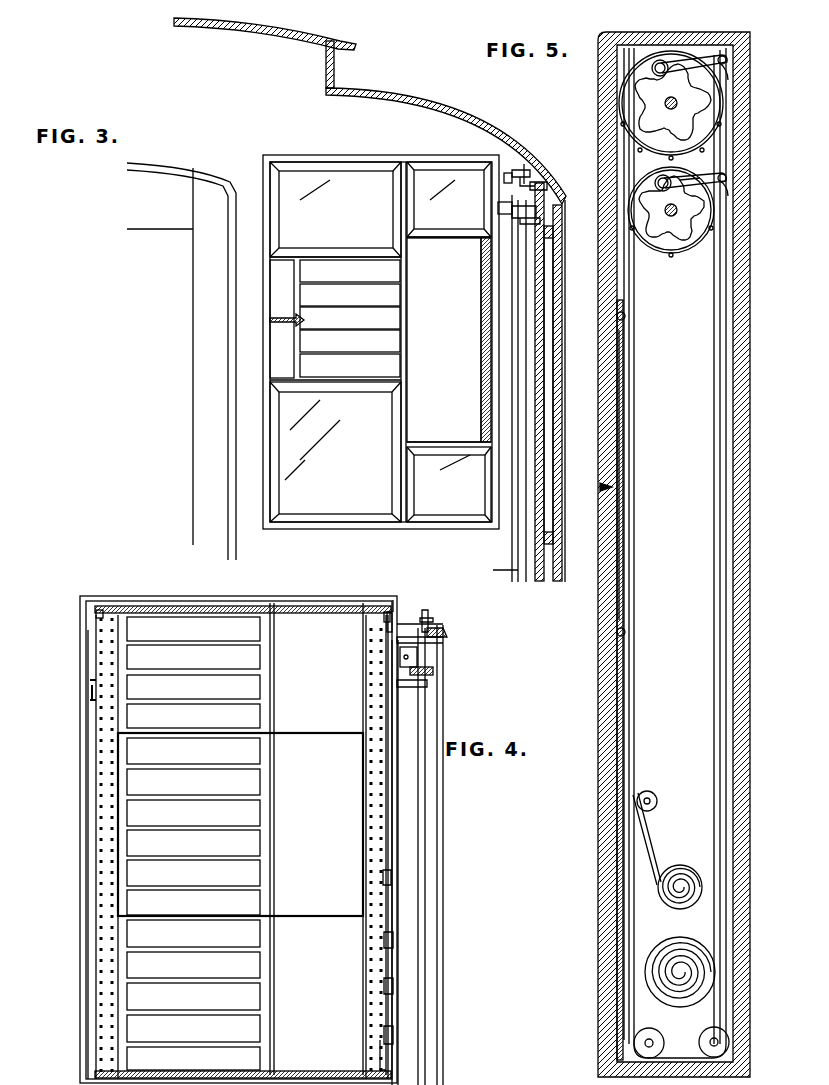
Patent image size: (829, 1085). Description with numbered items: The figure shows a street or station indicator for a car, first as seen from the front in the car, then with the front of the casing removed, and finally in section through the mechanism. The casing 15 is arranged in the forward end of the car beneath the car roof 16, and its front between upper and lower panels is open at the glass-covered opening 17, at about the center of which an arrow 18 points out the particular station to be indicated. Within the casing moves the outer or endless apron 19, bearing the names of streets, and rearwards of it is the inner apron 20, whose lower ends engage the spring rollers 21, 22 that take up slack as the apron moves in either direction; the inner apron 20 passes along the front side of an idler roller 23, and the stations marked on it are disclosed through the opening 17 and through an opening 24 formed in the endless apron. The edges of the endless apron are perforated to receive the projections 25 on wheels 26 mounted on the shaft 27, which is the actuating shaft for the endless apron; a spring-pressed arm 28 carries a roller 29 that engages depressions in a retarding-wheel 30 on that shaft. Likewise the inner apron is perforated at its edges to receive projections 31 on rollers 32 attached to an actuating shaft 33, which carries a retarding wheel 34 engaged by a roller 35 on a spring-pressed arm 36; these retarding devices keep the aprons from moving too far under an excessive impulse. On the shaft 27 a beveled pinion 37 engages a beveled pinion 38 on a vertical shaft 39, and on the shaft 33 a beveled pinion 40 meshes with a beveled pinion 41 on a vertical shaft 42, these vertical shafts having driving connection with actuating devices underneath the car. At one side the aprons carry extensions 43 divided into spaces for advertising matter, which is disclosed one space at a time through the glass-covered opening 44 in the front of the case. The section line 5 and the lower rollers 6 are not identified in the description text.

In FIG. 4, the shaft 5 is at (393, 605).
In FIG. 5, the guide rollers 6 is at (703, 1034).
In FIG. 3, the casing 15 is at (345, 156).
In FIG. 5, the casing 15 is at (750, 333).
In FIG. 4, the casing 15 is at (86, 831).
In FIG. 3, the car roof 16 is at (470, 121).
In FIG. 3, the opening 17 is at (300, 373).
In FIG. 5, the opening 17 is at (604, 418).
In FIG. 4, the opening 17 is at (260, 601).
In FIG. 3, the arrow 18 is at (270, 319).
In FIG. 5, the arrow 18 is at (604, 488).
In FIG. 4, the arrow 18 is at (240, 824).
In FIG. 5, the endless apron 19 is at (633, 709).
In FIG. 5, the apron 20 is at (640, 779).
In FIG. 4, the apron 20 is at (392, 877).
In FIG. 5, the spring roller 21 is at (671, 868).
In FIG. 4, the spring roller 21 is at (394, 987).
In FIG. 5, the spring roller 22 is at (673, 952).
In FIG. 4, the spring roller 22 is at (394, 1036).
In FIG. 5, the idler roller 23 is at (659, 800).
In FIG. 4, the idler roller 23 is at (394, 941).
In FIG. 5, the opening 24 is at (630, 386).
In FIG. 4, the opening 24 is at (393, 680).
In FIG. 5, the projections 25 is at (700, 138).
In FIG. 5, the wheels 26 is at (712, 86).
In FIG. 4, the wheels 26 is at (101, 612).
In FIG. 3, the shaft 27 is at (508, 172).
In FIG. 5, the shaft 27 is at (668, 97).
In FIG. 4, the shaft 27 is at (400, 624).
In FIG. 5, the spring-pressed arm 28 is at (690, 60).
In FIG. 5, the roller 29 is at (661, 61).
In FIG. 5, the retarding-wheel 30 is at (696, 105).
In FIG. 4, the retarding-wheel 30 is at (387, 612).
In FIG. 5, the projections 31 is at (672, 257).
In FIG. 5, the rollers 32 is at (700, 218).
In FIG. 4, the rollers 32 is at (92, 682).
In FIG. 5, the actuating shaft 33 is at (667, 213).
In FIG. 5, the retarding wheel 34 is at (692, 198).
In FIG. 5, the roller 35 is at (660, 178).
In FIG. 5, the spring-pressed arm 36 is at (688, 179).
In FIG. 3, the beveled pinion 37 is at (524, 172).
In FIG. 4, the beveled pinion 37 is at (429, 622).
In FIG. 3, the beveled pinion 38 is at (546, 186).
In FIG. 4, the beveled pinion 38 is at (445, 633).
In FIG. 3, the vertical shaft 39 is at (531, 262).
In FIG. 4, the vertical shaft 39 is at (440, 696).
In FIG. 3, the beveled pinion 40 is at (503, 209).
In FIG. 4, the beveled pinion 40 is at (419, 657).
In FIG. 3, the beveled pinion 41 is at (536, 213).
In FIG. 4, the beveled pinion 41 is at (434, 671).
In FIG. 3, the vertical shaft 42 is at (515, 300).
In FIG. 4, the vertical shaft 42 is at (426, 787).
In FIG. 3, the extensions 43 is at (449, 340).
In FIG. 4, the extensions 43 is at (316, 839).
In FIG. 3, the opening 44 is at (403, 404).
In FIG. 5, the opening 44 is at (612, 633).